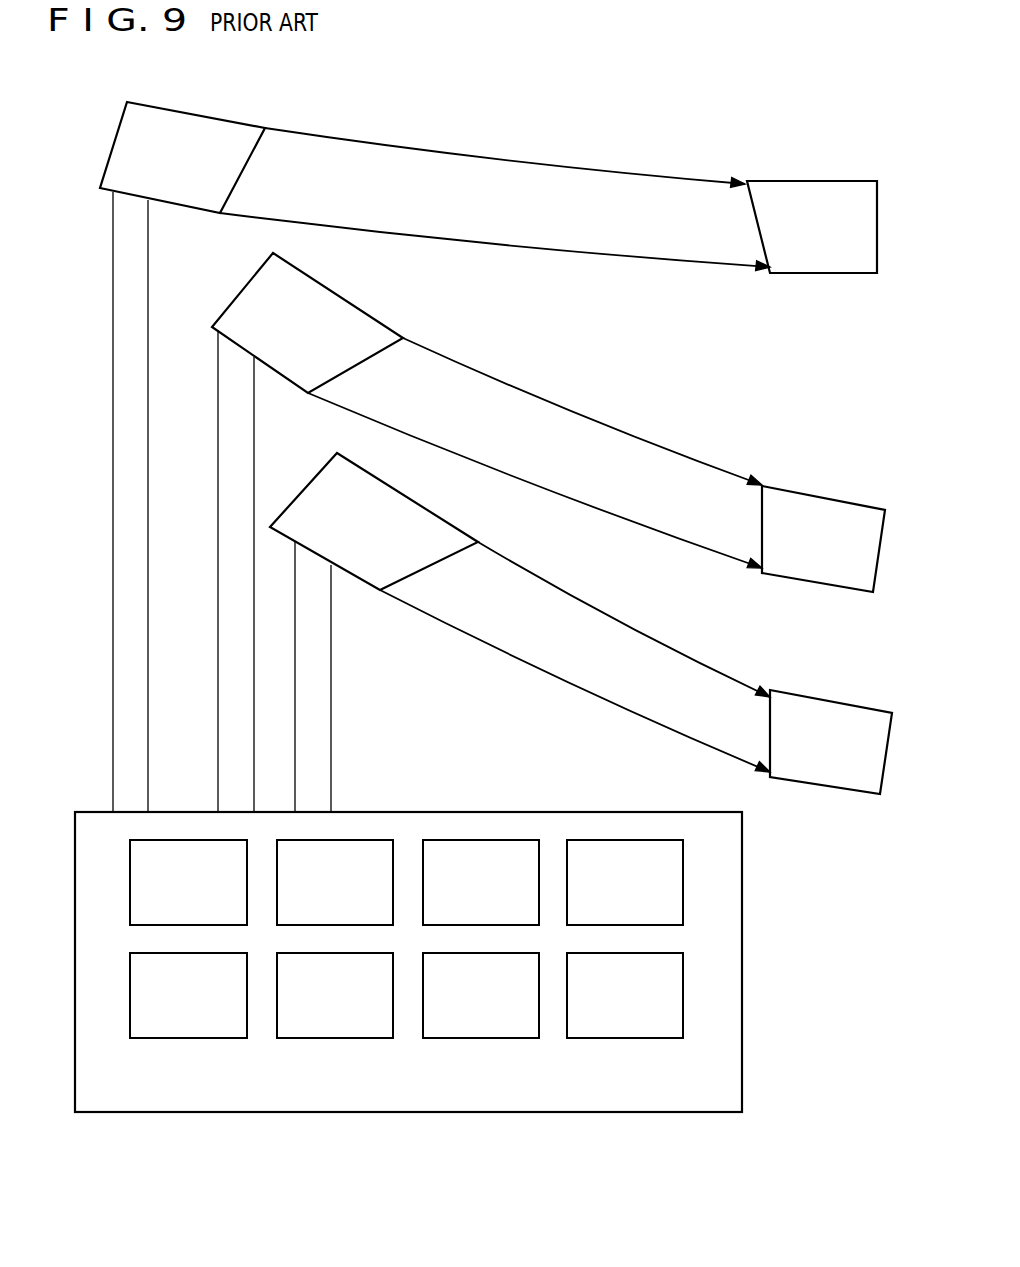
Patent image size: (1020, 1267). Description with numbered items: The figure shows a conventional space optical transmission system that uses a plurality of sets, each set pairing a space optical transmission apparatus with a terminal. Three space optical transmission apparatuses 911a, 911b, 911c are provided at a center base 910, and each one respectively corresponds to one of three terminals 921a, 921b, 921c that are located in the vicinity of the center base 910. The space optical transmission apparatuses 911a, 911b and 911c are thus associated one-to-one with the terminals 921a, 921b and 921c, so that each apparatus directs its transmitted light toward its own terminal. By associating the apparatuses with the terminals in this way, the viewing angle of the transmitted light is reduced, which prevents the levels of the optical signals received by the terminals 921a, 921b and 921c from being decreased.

The space optical transmission apparatus 911a is at (358, 580).
The space optical transmission apparatus 911b is at (252, 276).
The space optical transmission apparatus 911c is at (112, 145).
The terminal 921a is at (853, 703).
The terminal 921b is at (843, 502).
The terminal 921c is at (845, 181).
The center base 910 is at (742, 960).